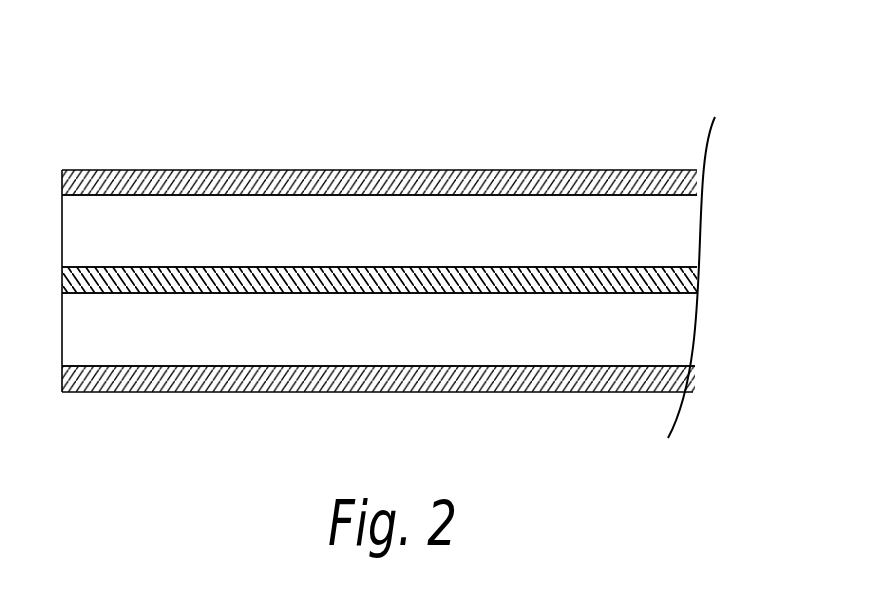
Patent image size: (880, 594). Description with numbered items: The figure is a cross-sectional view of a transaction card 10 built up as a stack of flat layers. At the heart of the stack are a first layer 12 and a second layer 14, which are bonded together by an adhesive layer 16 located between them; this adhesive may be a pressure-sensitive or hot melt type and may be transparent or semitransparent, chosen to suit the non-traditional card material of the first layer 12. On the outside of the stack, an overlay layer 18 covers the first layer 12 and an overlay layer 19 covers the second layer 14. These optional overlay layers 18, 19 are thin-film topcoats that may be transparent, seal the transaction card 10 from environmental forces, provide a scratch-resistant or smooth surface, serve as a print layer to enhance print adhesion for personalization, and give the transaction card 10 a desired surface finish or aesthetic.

The transaction card 10 is at (427, 248).
The overlay layer 18 is at (688, 180).
The first layer 12 is at (697, 233).
The adhesive layer 16 is at (695, 280).
The second layer 14 is at (695, 340).
The overlay layer 19 is at (695, 382).